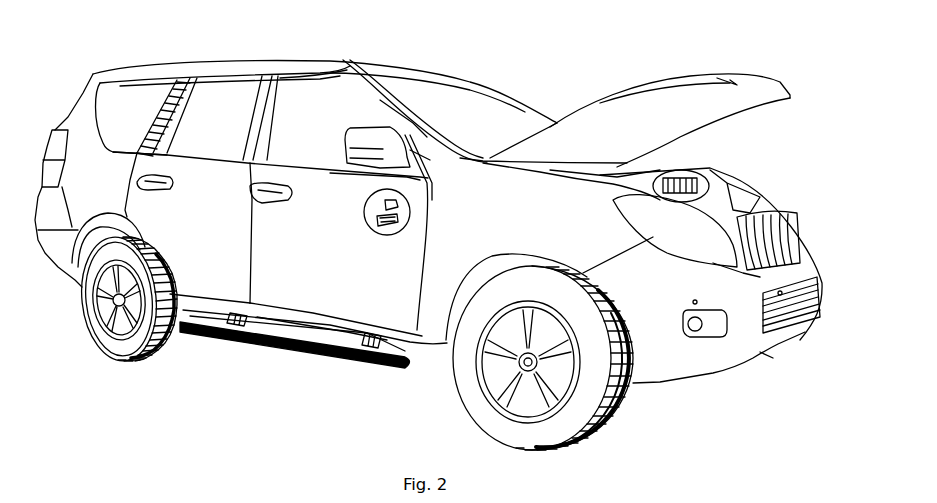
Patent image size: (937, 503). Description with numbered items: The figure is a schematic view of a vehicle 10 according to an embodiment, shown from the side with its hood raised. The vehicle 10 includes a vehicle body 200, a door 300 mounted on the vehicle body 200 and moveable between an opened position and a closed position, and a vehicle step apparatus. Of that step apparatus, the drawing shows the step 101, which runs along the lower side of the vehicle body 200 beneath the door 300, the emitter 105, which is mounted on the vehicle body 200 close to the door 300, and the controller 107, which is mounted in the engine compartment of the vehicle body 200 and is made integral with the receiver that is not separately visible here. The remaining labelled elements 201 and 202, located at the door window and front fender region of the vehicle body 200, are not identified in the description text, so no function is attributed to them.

The vehicle 10 is at (617, 92).
The vehicle body 200 is at (443, 200).
The door window 201 is at (318, 108).
The front fender 202 is at (642, 177).
The emitter 105 is at (375, 223).
The controller 107 is at (707, 170).
The step 101 is at (306, 355).
The door 300 is at (385, 275).